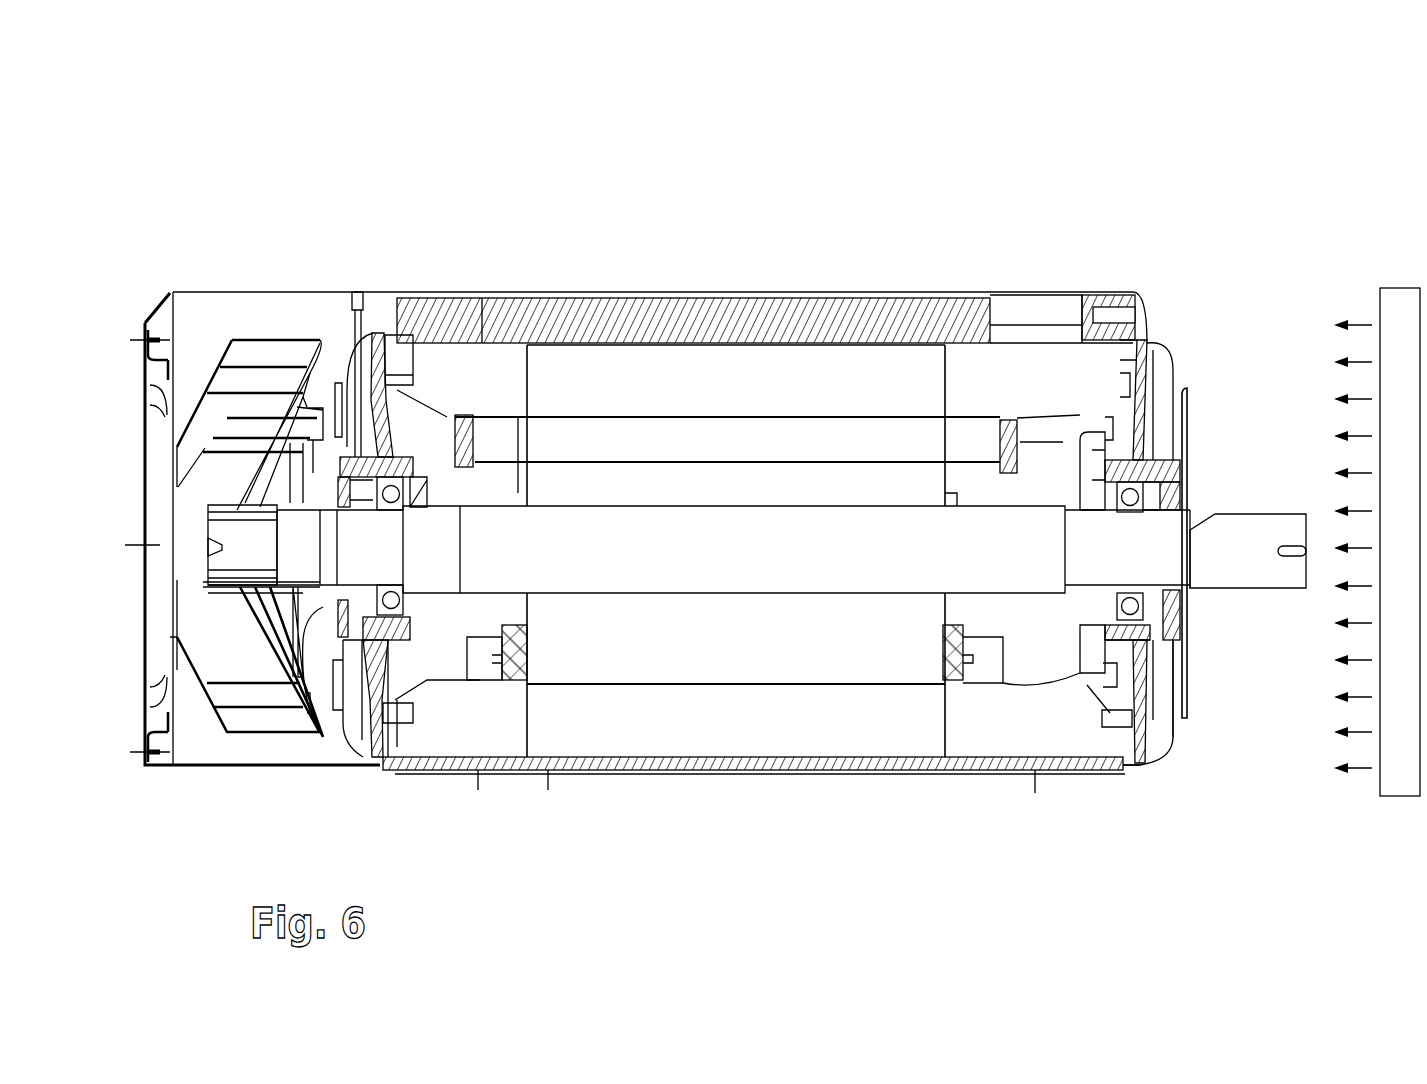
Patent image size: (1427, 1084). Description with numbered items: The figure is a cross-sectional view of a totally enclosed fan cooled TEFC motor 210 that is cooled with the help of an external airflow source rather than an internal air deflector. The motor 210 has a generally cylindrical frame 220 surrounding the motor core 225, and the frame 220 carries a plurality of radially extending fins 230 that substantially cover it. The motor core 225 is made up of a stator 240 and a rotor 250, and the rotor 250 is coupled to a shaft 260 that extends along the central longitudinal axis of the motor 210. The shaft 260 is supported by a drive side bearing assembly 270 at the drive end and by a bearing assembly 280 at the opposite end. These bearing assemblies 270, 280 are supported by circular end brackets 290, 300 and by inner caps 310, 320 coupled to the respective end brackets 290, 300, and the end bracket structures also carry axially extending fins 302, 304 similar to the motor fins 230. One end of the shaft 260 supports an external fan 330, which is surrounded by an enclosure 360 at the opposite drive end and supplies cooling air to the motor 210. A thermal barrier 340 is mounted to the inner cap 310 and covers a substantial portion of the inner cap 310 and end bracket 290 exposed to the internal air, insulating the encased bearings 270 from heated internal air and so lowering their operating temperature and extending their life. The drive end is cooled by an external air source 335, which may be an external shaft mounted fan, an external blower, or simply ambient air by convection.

The TEFC motor 210 is at (298, 148).
The frame 220 is at (922, 760).
The motor core 225 is at (838, 385).
The radial extending fins 230 is at (680, 297).
The stator 240 is at (815, 712).
The rotor 250 is at (720, 647).
The shaft 260 is at (587, 562).
The drive side bearing assembly 270 is at (1148, 395).
The bearing assembly 280 is at (395, 490).
The end bracket 290 is at (1189, 431).
The end bracket 300 is at (398, 660).
The axially extending fins 302 is at (1172, 740).
The axially extending fins 304 is at (345, 735).
The inner cap 310 is at (1105, 450).
The inner cap 320 is at (412, 467).
The external fan 330 is at (270, 352).
The external air source 335 is at (1406, 288).
The thermal barrier 340 is at (1085, 690).
The enclosure 360 is at (210, 290).